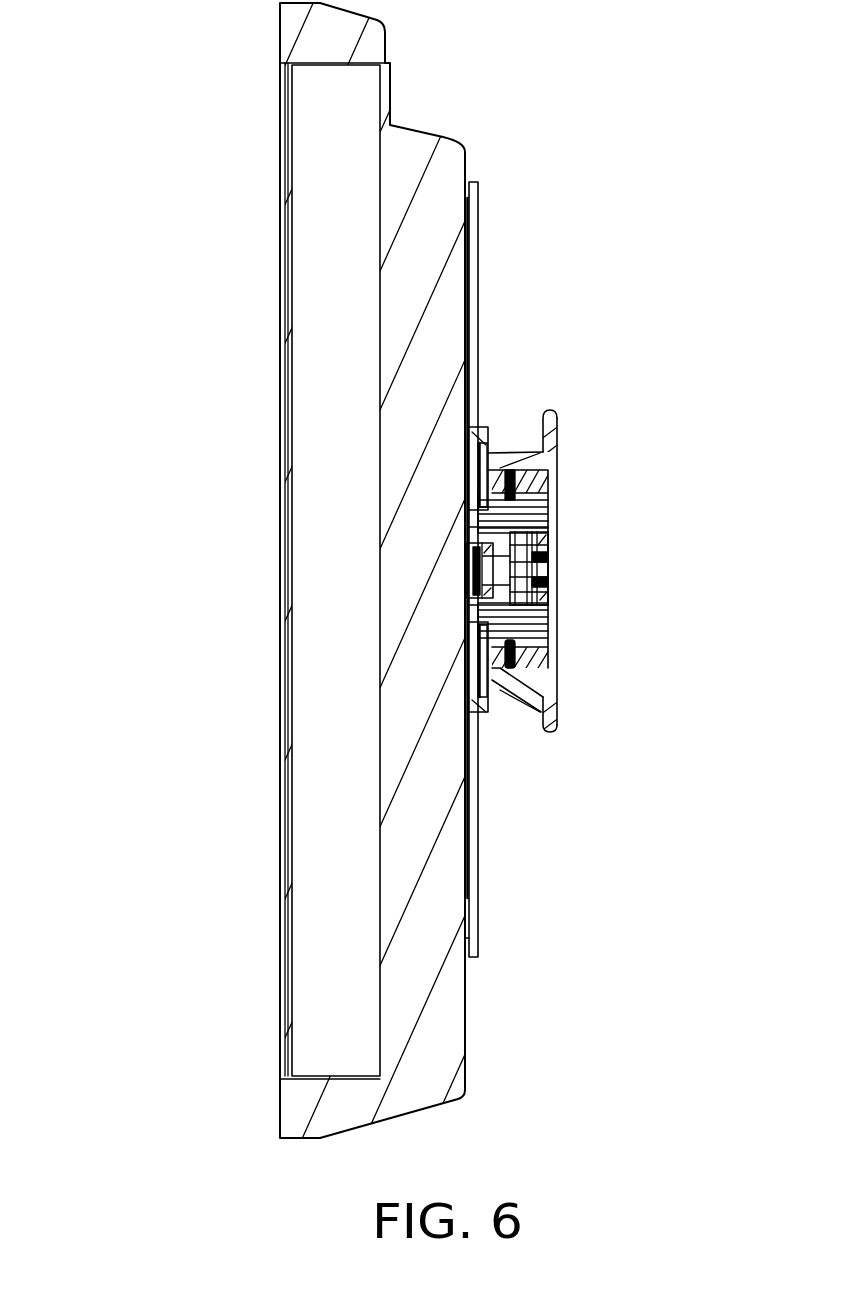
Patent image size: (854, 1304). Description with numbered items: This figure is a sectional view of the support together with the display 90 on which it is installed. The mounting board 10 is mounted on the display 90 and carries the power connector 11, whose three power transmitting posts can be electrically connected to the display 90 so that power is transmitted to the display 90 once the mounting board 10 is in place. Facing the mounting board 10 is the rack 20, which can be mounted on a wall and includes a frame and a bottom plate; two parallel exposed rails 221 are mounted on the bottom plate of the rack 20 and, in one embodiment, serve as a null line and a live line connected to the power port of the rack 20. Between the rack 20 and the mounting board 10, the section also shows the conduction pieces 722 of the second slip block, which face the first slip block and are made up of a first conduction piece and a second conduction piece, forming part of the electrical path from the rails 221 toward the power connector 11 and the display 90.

The display 90 is at (352, 332).
The mounting board 10 is at (473, 213).
The rack 20 is at (558, 438).
The rails 221 is at (553, 532).
The conduction pieces 722 is at (548, 575).
The power connector 11 is at (467, 556).